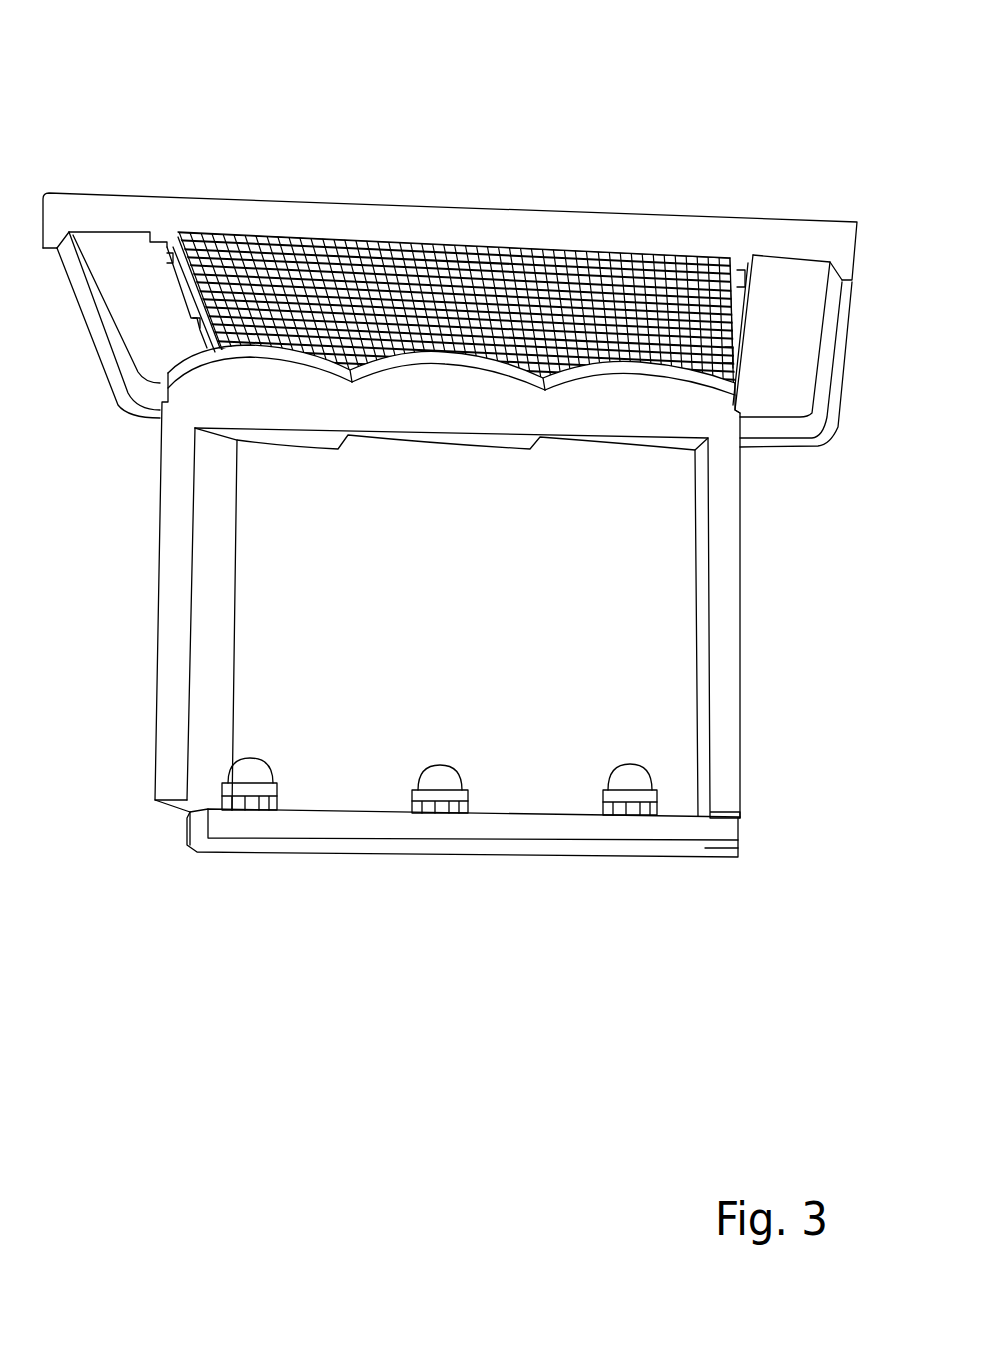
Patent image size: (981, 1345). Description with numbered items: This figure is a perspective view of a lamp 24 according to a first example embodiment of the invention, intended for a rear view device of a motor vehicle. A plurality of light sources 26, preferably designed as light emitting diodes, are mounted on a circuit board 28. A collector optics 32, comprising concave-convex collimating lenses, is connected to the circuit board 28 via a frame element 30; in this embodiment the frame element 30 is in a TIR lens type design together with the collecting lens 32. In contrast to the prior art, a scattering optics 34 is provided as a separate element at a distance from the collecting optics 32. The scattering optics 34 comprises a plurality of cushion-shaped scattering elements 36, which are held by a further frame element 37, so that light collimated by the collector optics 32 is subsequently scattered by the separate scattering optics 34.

The lamp 24 is at (692, 97).
The light sources 26 is at (262, 770).
The circuit board 28 is at (497, 832).
The frame element 30 is at (735, 625).
The collector optics 32 is at (463, 390).
The scattering optics 34 is at (513, 253).
The cushion-shaped scattering elements 36 is at (312, 258).
The further frame element 37 is at (813, 437).